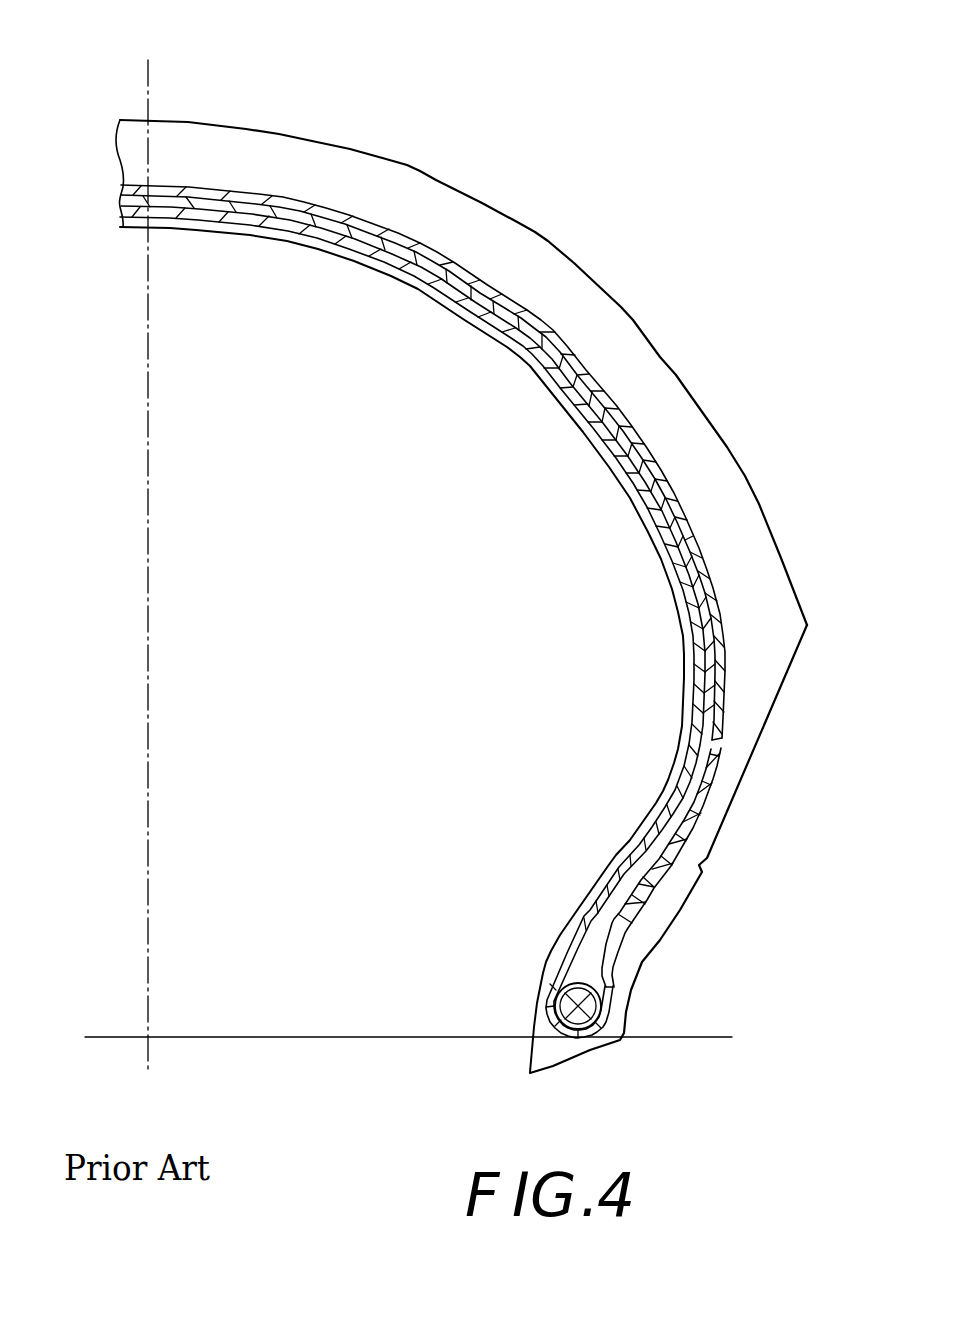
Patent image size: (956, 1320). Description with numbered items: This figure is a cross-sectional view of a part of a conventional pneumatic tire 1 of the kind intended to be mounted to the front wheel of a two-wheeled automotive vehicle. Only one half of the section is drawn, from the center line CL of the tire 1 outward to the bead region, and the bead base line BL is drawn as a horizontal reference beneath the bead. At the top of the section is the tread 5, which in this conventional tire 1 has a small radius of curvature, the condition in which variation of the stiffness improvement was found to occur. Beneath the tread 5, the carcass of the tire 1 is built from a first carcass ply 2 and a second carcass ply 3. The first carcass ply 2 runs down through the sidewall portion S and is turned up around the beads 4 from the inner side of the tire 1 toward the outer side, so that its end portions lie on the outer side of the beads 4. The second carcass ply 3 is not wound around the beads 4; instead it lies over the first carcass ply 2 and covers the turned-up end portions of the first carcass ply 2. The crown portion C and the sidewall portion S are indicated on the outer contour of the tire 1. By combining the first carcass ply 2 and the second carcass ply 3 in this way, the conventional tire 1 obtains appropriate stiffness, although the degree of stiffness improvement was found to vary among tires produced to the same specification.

The tire 1 is at (461, 544).
The first carcass ply 2 is at (289, 229).
The second carcass ply 3 is at (465, 282).
The beads 4 is at (606, 895).
The tread 5 is at (346, 157).
The crown portion C is at (198, 112).
The sidewall portion S is at (704, 392).
The tire center line CL is at (147, 765).
The bead base line BL is at (283, 1036).